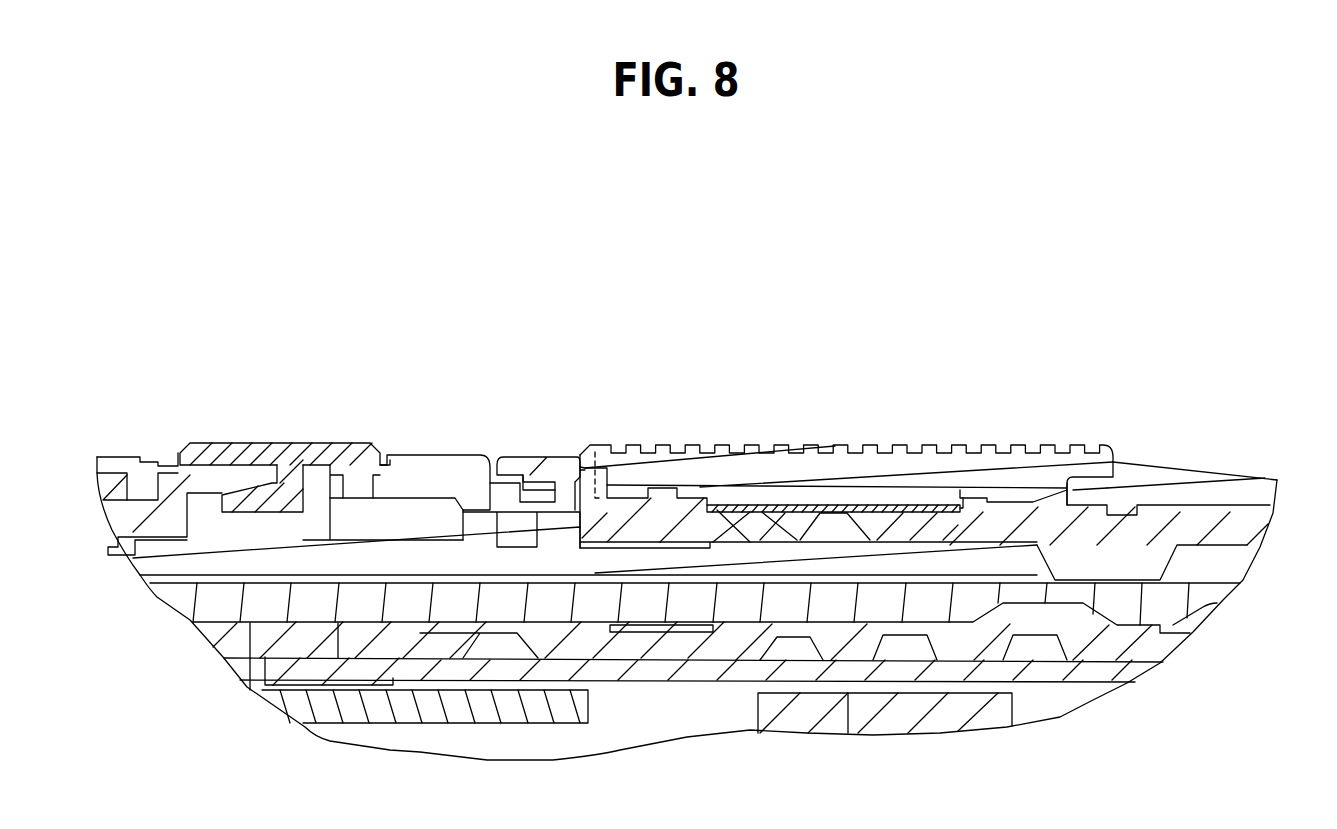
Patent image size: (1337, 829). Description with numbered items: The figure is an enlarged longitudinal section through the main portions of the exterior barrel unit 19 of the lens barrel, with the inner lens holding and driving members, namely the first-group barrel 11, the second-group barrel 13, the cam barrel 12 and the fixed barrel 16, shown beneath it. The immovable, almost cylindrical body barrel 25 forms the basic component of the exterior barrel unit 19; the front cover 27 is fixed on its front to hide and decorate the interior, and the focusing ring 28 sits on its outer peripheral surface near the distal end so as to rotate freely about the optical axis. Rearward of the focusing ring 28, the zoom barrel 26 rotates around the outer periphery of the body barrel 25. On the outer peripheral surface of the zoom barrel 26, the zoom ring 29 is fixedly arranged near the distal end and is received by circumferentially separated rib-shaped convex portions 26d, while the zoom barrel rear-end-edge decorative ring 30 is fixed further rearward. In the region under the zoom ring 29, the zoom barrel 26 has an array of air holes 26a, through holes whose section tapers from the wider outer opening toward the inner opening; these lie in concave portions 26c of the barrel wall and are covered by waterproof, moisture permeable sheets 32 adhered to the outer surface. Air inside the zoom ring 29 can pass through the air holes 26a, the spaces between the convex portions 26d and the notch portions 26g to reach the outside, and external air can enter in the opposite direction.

The exterior barrel unit 19 is at (98, 327).
The front cover 27 is at (125, 462).
The first-group barrel 11 is at (223, 602).
The focusing ring 28 is at (290, 465).
The second-group barrel 13 is at (375, 707).
The cam barrel 12 is at (400, 640).
The fixed barrel 16 is at (465, 670).
The body barrel 25 is at (592, 562).
The zoom barrel 26 is at (650, 483).
The notch portions 26g is at (600, 452).
The rib-shaped convex portions 26d is at (663, 520).
The air holes 26a is at (795, 526).
The moisture permeable sheets 32 is at (833, 503).
The concave portions 26c is at (955, 493).
The zoom ring 29 is at (948, 485).
The zoom barrel rear-end-edge decorative ring 30 is at (1147, 473).